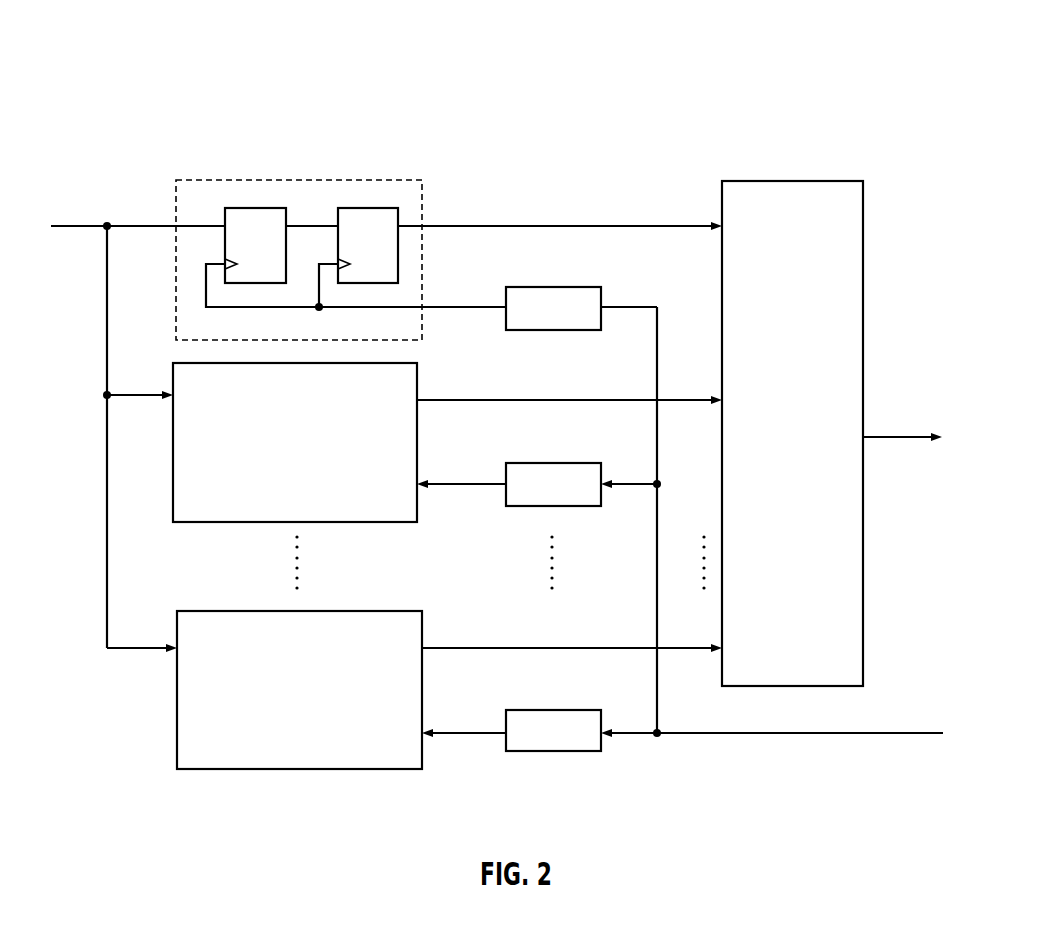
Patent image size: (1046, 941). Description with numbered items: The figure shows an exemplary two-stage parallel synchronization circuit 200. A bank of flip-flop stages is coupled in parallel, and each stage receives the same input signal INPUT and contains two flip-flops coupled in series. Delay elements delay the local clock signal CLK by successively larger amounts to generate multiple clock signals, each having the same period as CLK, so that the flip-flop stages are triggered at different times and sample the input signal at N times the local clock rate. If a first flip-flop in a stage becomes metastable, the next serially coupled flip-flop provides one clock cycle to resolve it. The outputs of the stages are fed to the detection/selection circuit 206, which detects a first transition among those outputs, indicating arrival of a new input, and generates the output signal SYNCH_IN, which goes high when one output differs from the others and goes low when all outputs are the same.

The synchronization input detection system 200 is at (498, 396).
The detection/selection circuit 206 is at (810, 472).